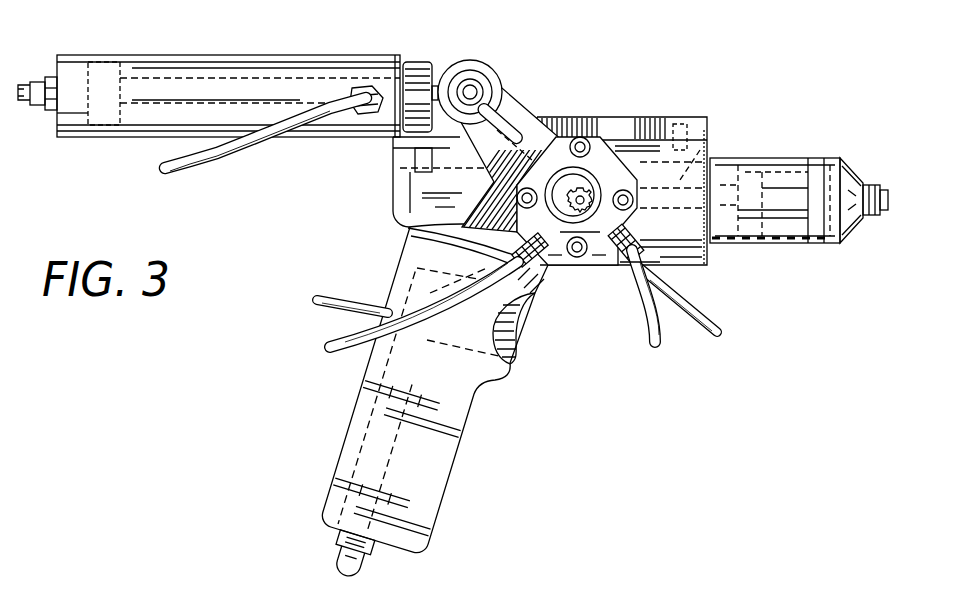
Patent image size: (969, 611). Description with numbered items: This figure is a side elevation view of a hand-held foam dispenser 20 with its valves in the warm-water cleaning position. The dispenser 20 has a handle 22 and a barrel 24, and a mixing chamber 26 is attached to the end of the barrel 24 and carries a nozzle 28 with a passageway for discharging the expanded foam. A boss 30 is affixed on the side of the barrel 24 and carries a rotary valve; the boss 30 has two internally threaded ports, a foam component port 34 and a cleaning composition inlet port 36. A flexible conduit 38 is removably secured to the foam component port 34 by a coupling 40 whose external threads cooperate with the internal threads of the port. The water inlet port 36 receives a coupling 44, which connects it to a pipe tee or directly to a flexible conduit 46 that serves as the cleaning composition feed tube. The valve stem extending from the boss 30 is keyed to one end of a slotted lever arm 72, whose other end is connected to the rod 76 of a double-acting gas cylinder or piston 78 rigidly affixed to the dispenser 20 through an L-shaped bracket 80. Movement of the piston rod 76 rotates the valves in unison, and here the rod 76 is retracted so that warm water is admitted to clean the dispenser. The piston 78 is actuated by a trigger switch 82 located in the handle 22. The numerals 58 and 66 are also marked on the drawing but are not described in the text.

The foam dispenser 20 is at (678, 111).
The handle 22 is at (346, 447).
The barrel 24 is at (627, 145).
The mixing chamber 26 is at (764, 157).
The nozzle 28 is at (808, 157).
The boss 30 is at (595, 138).
The foam component port 34 is at (560, 270).
The cleaning composition inlet port 36 is at (602, 268).
The conduit 38 is at (330, 343).
The coupling 40 is at (413, 225).
The coupling 44 is at (690, 268).
The conduit 46 is at (717, 336).
The knurled ring 58 is at (716, 142).
The lock ring 66 is at (742, 247).
The lever arm 72 is at (513, 105).
The piston rod 76 is at (167, 78).
The double-acting gas cylinder or piston 78 is at (279, 50).
The L-shaped bracket 80 is at (397, 55).
The trigger switch 82 is at (527, 357).